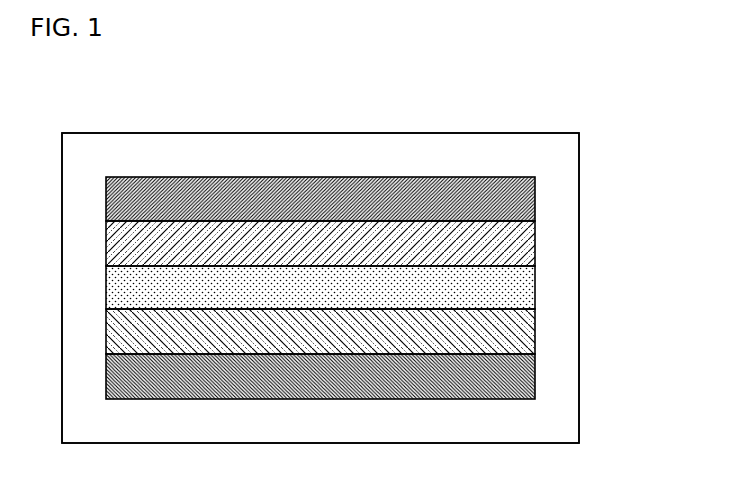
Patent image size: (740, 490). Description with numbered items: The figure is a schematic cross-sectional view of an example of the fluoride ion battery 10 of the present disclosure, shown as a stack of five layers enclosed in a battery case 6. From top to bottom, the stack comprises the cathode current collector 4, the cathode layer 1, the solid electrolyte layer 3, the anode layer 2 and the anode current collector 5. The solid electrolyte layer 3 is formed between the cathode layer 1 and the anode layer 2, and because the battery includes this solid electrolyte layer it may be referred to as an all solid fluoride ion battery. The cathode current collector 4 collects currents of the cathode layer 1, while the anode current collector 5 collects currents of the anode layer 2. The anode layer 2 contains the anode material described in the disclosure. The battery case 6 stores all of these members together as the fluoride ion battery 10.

The fluoride ion battery 10 is at (555, 108).
The battery case 6 is at (548, 160).
The cathode current collector 4 is at (508, 203).
The cathode layer 1 is at (505, 250).
The solid electrolyte layer 3 is at (505, 294).
The anode layer 2 is at (505, 338).
The anode current collector 5 is at (508, 382).